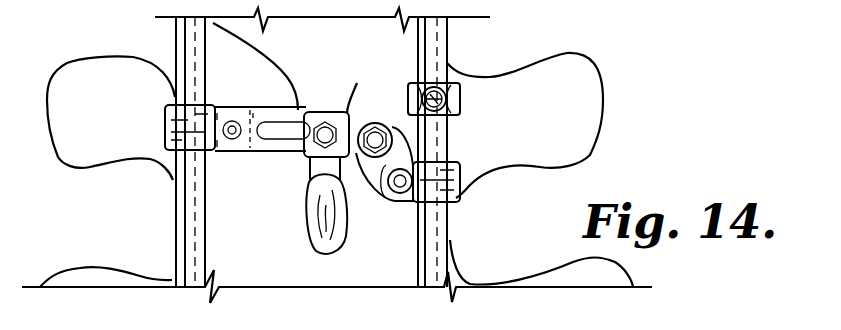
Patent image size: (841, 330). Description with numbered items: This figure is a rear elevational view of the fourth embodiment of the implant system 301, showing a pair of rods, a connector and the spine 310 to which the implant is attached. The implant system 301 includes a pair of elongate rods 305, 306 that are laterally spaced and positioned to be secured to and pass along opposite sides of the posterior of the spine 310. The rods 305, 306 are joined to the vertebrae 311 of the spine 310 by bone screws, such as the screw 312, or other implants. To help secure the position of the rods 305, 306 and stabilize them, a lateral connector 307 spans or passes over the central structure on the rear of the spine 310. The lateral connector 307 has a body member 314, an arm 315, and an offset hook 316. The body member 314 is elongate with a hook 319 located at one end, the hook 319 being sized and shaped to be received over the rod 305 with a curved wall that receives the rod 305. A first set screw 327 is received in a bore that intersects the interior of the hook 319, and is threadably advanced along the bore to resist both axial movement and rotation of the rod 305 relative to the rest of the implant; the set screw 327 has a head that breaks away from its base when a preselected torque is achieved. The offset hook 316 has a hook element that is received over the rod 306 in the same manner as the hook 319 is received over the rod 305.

The implant system 301 is at (128, 177).
The rod 305 is at (176, 42).
The rod 306 is at (447, 240).
The lateral connector 307 is at (268, 107).
The spine 310 is at (604, 103).
The vertebrae 311 is at (590, 160).
The bone screw 312 is at (462, 100).
The body member 314 is at (235, 153).
The arm 315 is at (372, 118).
The offset hook 316 is at (413, 216).
The hook 319 is at (165, 110).
The first set screw 327 is at (232, 122).